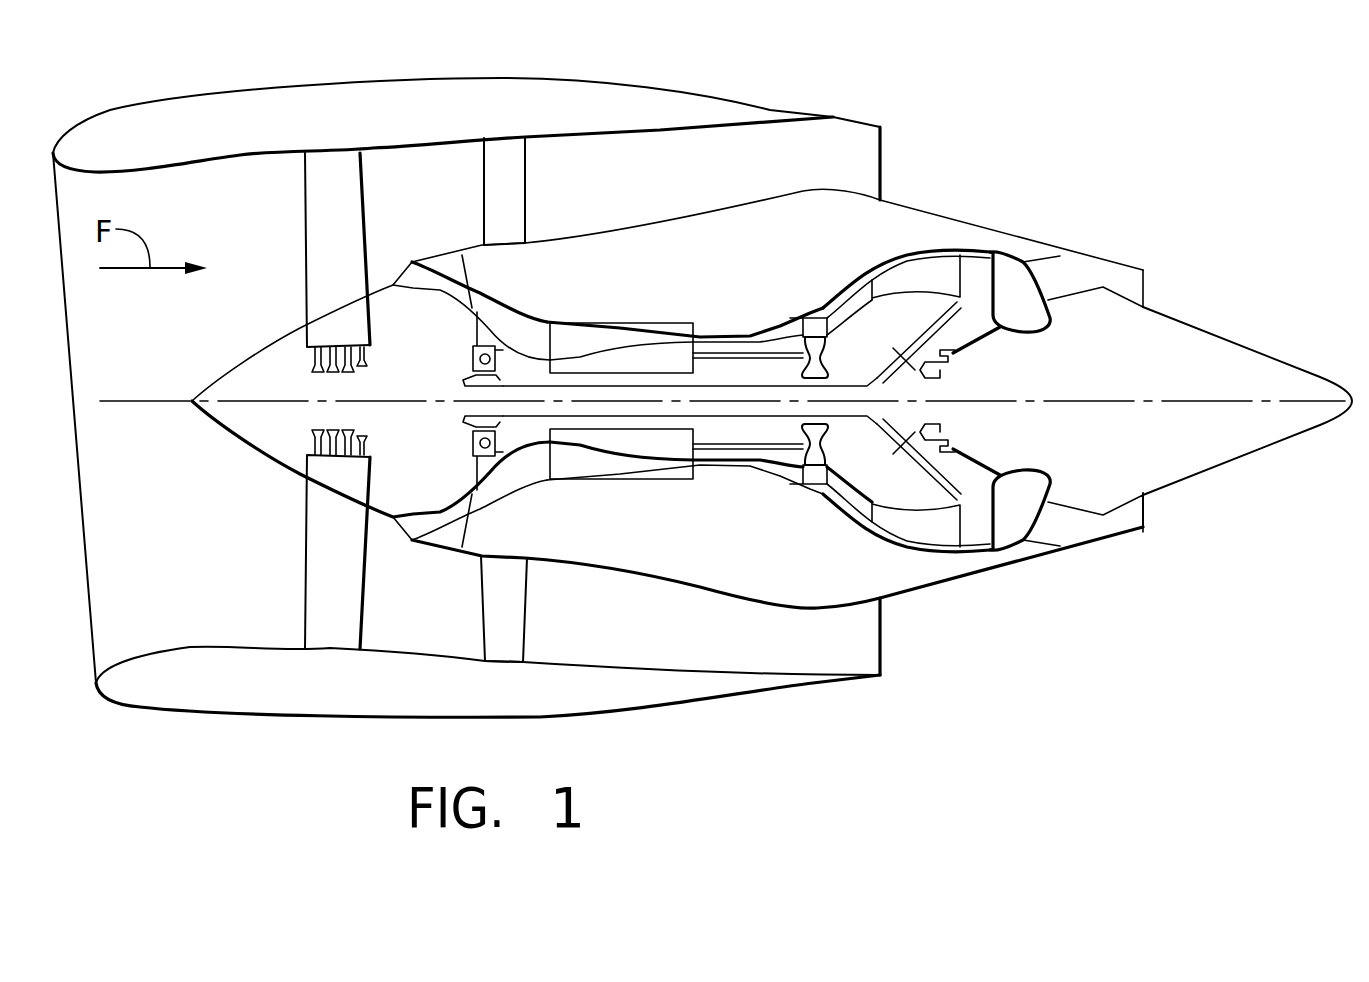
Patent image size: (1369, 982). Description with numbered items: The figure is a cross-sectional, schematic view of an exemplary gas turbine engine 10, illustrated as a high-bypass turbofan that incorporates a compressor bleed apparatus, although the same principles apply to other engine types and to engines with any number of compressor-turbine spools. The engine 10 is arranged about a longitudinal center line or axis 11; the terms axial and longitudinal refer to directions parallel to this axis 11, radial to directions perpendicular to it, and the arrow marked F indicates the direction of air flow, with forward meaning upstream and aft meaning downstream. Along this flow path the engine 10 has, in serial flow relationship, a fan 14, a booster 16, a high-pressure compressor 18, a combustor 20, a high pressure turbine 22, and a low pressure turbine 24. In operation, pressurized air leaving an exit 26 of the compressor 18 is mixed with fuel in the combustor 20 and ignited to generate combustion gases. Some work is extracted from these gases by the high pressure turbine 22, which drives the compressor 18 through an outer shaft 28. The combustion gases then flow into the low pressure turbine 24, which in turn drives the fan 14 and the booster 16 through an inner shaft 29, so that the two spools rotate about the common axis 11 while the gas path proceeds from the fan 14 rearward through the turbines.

The gas turbine engine 10 is at (859, 85).
The longitudinal center line or axis 11 is at (120, 390).
The fan 14 is at (332, 235).
The booster 16 is at (453, 281).
The high-pressure compressor 18 is at (572, 338).
The combustor 20 is at (768, 330).
The high pressure turbine 22 is at (816, 478).
The low pressure turbine 24 is at (916, 270).
The exit of the compressor 26 is at (693, 462).
The outer shaft 28 is at (758, 447).
The inner shaft 29 is at (596, 414).